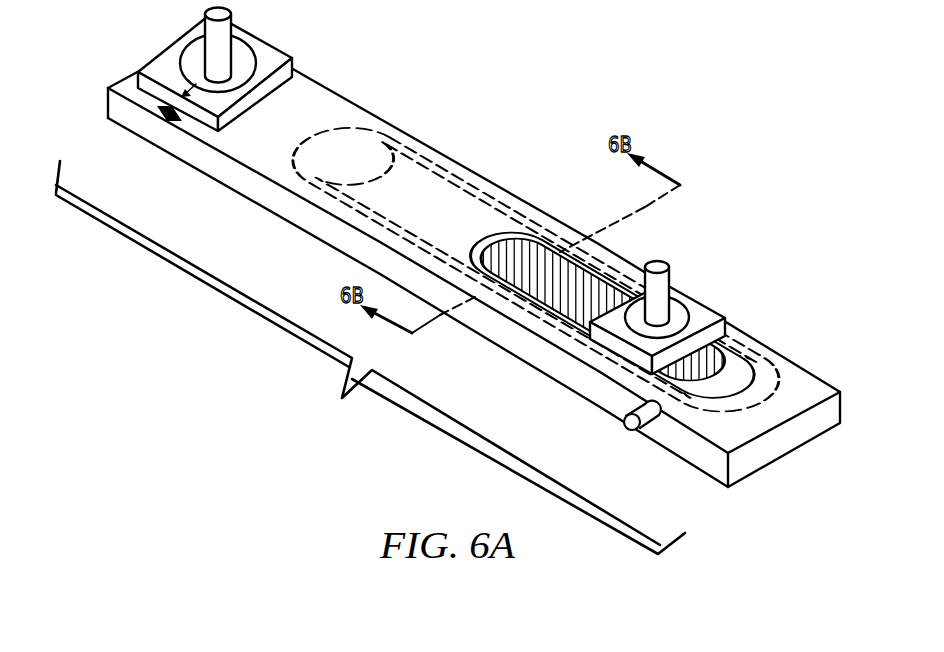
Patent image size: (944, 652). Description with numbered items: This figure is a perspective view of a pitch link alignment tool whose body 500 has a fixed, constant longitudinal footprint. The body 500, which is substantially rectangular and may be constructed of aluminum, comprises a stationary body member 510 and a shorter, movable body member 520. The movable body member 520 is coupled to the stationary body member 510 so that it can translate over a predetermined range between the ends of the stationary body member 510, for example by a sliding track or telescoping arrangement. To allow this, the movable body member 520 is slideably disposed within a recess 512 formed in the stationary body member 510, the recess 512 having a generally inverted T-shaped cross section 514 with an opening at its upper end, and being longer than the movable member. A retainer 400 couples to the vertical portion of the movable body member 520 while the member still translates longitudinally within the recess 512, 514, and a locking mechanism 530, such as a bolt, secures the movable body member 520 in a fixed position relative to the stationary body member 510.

The retainer 400 is at (292, 58).
The body 500 is at (392, 383).
The stationary body member 510 is at (455, 170).
The recess 512 is at (363, 163).
The inverted T-shaped cross section 514 is at (542, 243).
The movable body member 520 is at (583, 287).
The locking mechanism 530 is at (628, 428).